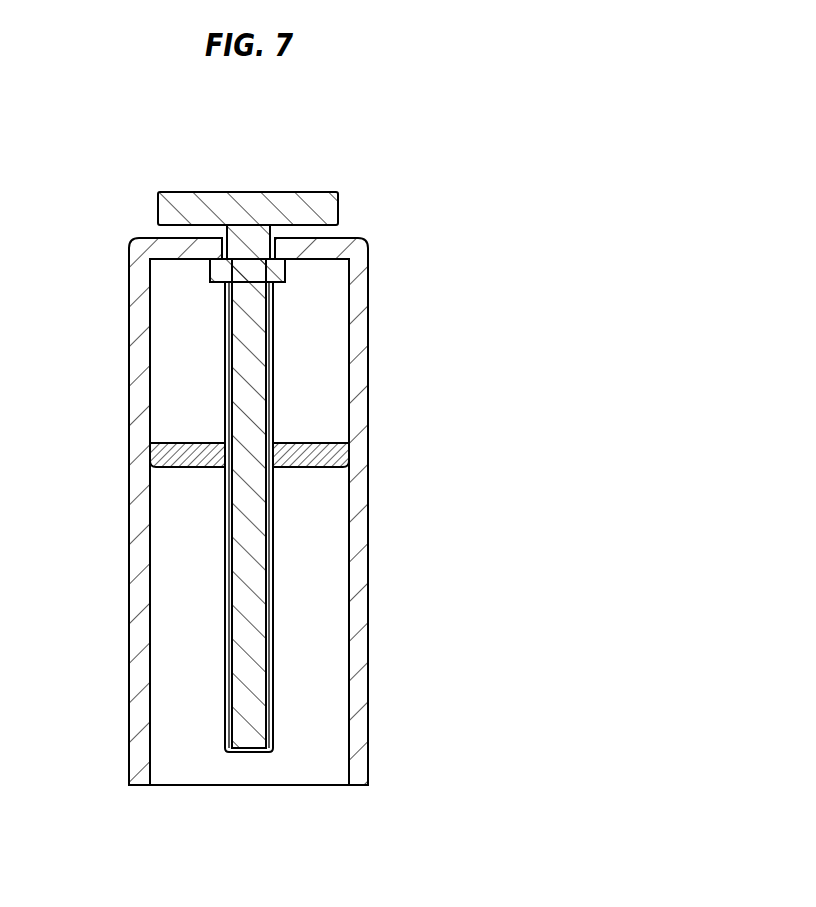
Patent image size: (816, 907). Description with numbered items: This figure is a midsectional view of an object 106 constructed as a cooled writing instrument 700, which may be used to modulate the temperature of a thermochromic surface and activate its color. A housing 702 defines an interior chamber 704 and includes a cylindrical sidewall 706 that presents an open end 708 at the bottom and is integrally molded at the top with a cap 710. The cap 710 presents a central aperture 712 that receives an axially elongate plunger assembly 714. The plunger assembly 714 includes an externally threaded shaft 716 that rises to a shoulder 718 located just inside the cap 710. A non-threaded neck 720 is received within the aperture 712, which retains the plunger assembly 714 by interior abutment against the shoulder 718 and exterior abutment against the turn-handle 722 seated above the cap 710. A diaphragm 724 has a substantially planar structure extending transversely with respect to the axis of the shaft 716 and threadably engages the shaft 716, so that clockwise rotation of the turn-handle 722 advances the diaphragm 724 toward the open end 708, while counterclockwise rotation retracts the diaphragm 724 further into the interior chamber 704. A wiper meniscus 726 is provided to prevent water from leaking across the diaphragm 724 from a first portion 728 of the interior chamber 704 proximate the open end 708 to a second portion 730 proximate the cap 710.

The object 106 is at (507, 175).
The cooled writing instrument 700 is at (403, 257).
The housing 702 is at (127, 432).
The interior chamber 704 is at (339, 340).
The cylindrical sidewall 706 is at (360, 517).
The open end 708 is at (318, 762).
The cap 710 is at (147, 246).
The central aperture 712 is at (275, 250).
The plunger assembly 714 is at (178, 191).
The externally threaded shaft 716 is at (274, 683).
The shoulder 718 is at (276, 288).
The non-threaded neck 720 is at (226, 277).
The turn-handle 722 is at (312, 191).
The diaphragm 724 is at (299, 468).
The wiper meniscus 726 is at (153, 470).
The first portion of the interior chamber 728 is at (253, 517).
The second portion of the interior chamber 730 is at (242, 389).